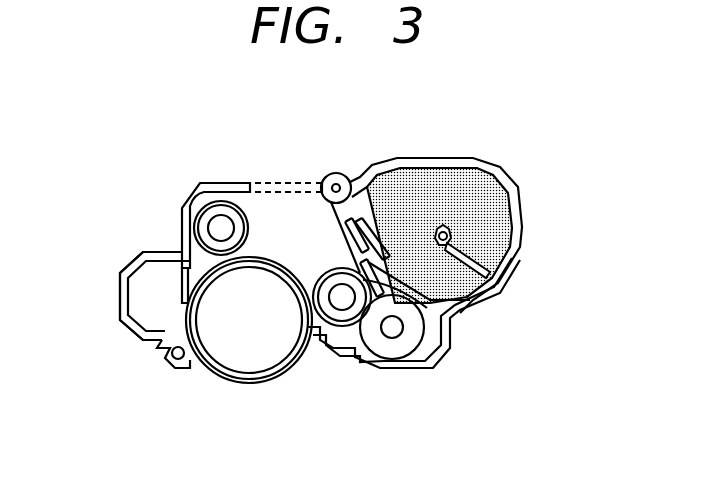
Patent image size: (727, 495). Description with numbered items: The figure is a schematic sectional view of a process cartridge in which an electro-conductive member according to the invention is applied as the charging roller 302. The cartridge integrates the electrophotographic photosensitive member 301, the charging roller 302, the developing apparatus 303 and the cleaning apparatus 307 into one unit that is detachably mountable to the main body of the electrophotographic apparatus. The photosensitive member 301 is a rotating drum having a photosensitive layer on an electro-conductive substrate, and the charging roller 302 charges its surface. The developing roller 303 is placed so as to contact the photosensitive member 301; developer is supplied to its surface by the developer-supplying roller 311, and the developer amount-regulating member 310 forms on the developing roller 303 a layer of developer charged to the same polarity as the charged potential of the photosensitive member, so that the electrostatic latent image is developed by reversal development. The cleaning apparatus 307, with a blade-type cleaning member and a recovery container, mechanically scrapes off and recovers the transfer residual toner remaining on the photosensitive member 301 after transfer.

The electrophotographic photosensitive member 301 is at (252, 348).
The charging roller 302 is at (200, 225).
The developing apparatus 303 is at (342, 306).
The cleaning apparatus 307 is at (182, 287).
The developer amount-regulating member 310 is at (493, 294).
The developer-supplying roller 311 is at (392, 332).